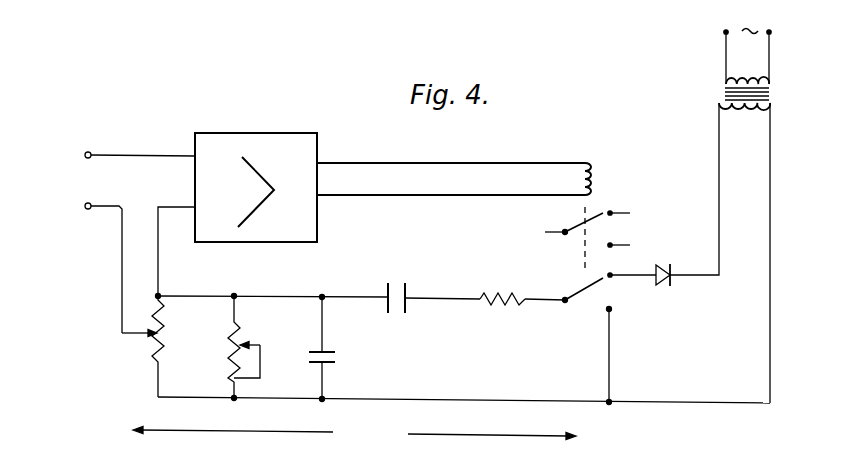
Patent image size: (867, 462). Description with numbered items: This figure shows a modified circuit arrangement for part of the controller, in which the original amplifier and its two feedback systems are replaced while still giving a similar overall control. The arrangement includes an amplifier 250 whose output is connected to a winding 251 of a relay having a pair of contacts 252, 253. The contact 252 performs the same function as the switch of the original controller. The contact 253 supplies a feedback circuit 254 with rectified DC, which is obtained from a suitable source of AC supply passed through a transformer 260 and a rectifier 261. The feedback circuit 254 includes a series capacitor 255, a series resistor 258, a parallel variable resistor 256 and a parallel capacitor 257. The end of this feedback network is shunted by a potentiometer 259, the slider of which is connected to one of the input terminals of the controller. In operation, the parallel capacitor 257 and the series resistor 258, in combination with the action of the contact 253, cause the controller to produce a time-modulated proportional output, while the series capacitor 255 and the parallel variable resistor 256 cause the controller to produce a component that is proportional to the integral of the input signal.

The amplifier 250 is at (246, 134).
The winding 251 is at (587, 166).
The contact 252 is at (604, 229).
The contact 253 is at (586, 300).
The feedback circuit 254 is at (354, 431).
The series capacitor 255 is at (396, 287).
The parallel variable resistor 256 is at (255, 347).
The parallel capacitor 257 is at (341, 348).
The series resistor 258 is at (502, 310).
The potentiometer 259 is at (162, 346).
The transformer 260 is at (722, 95).
The rectifier 261 is at (665, 287).